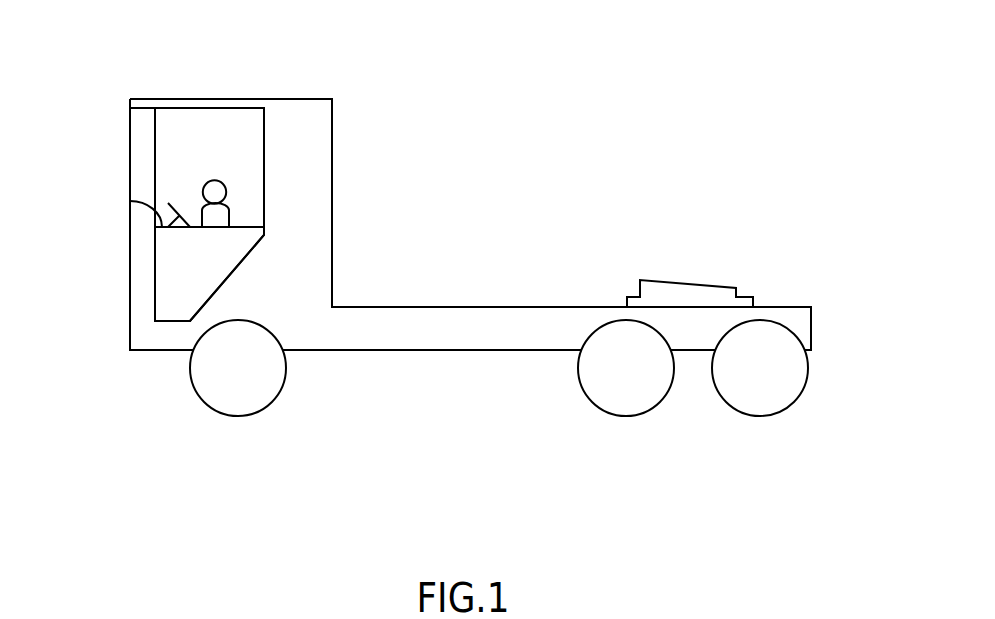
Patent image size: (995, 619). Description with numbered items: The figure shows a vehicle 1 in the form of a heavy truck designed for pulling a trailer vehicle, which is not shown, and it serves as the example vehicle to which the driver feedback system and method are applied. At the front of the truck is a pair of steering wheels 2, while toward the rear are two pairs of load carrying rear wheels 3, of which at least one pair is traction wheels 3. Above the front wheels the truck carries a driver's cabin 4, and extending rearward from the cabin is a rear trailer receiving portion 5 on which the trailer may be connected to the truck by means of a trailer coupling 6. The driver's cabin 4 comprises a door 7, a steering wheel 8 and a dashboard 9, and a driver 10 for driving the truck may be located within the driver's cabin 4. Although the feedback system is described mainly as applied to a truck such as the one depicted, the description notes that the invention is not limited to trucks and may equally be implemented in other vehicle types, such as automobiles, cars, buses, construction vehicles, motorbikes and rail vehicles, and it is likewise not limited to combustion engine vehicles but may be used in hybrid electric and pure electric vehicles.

The vehicle 1 is at (548, 145).
The steering wheels 2 is at (229, 382).
The rear wheels 3 is at (614, 380).
The driver's cabin 4 is at (203, 122).
The rear trailer receiving portion 5 is at (517, 319).
The trailer coupling 6 is at (695, 296).
The door 7 is at (227, 251).
The steering wheel 8 is at (169, 180).
The dashboard 9 is at (142, 216).
The driver 10 is at (216, 216).